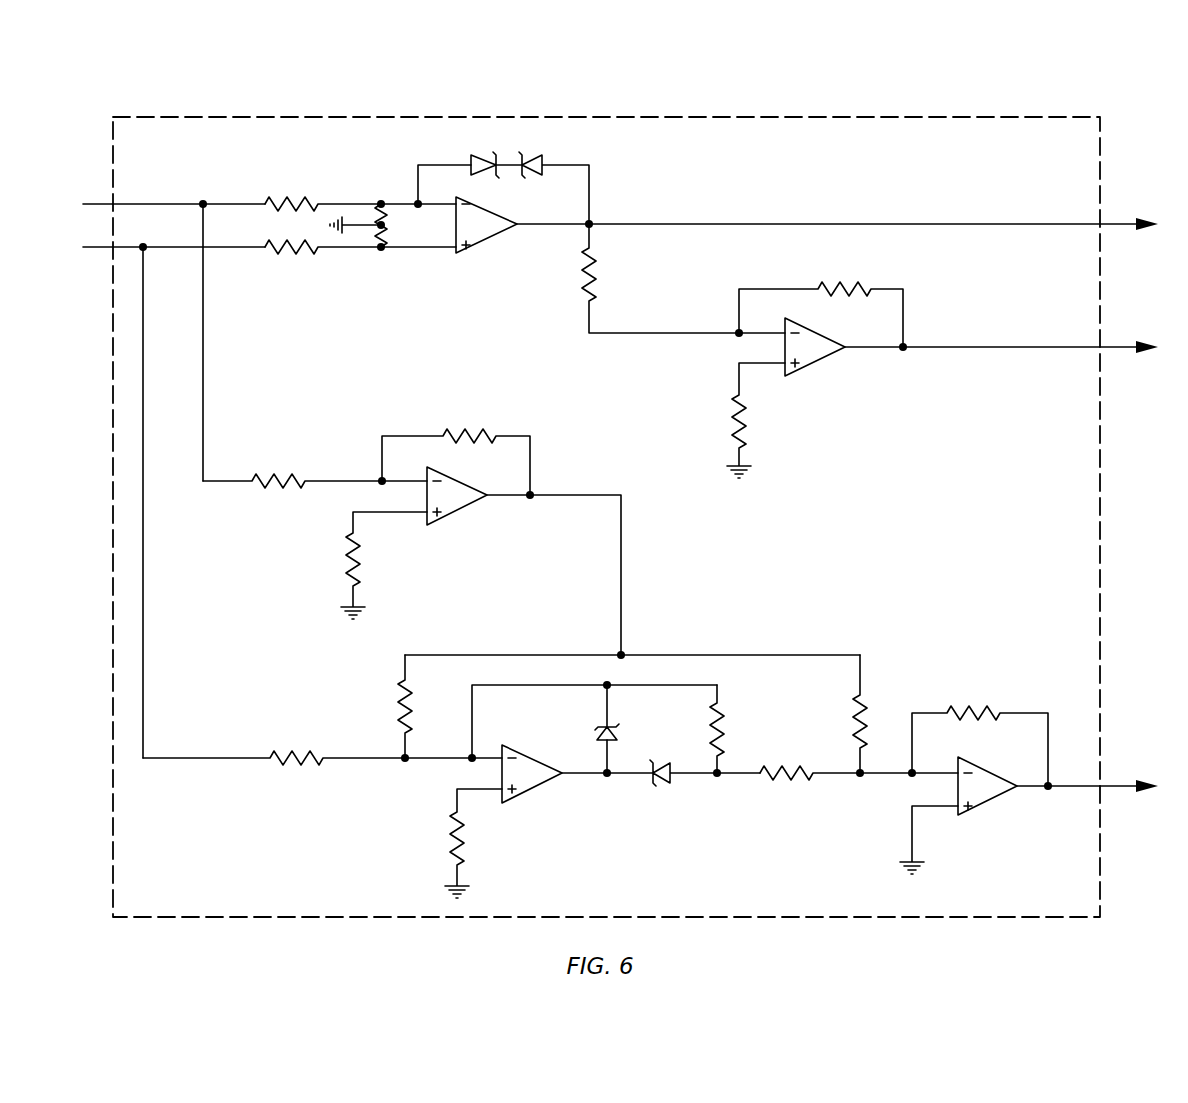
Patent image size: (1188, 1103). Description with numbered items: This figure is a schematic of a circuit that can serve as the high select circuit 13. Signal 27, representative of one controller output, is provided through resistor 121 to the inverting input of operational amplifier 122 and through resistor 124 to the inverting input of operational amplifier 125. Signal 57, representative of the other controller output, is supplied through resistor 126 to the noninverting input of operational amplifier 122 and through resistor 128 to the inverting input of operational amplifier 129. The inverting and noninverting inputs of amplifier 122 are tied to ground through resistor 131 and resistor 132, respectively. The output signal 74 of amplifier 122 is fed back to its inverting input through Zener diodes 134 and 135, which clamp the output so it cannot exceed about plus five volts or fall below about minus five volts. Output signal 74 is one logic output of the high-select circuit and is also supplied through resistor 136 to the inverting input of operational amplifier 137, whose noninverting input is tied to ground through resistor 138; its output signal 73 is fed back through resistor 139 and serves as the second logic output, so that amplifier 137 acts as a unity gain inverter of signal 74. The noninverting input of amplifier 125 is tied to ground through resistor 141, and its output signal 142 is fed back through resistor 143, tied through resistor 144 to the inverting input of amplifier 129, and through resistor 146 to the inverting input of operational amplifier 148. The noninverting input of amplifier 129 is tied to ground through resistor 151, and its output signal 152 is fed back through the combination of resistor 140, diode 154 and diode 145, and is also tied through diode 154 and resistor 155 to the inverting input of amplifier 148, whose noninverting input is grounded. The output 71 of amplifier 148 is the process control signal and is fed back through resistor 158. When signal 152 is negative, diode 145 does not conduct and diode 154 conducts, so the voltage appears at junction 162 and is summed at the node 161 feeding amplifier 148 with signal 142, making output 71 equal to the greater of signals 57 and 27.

The high select circuit 13 is at (1101, 138).
The signal 27 is at (88, 202).
The signal 57 is at (85, 250).
The output 71 is at (1122, 782).
The output signal 73 is at (1125, 350).
The output signal 74 is at (1130, 222).
The resistor 121 is at (290, 200).
The operational amplifier 122 is at (490, 248).
The resistor 124 is at (279, 476).
The operational amplifier 125 is at (448, 526).
The resistor 126 is at (303, 252).
The resistor 128 is at (297, 762).
The operational amplifier 129 is at (522, 804).
The resistor 131 is at (386, 214).
The resistor 132 is at (386, 237).
The Zener diode 134 is at (546, 154).
The Zener diode 135 is at (480, 153).
The resistor 136 is at (597, 285).
The operational amplifier 137 is at (806, 378).
The resistor 138 is at (733, 423).
The resistor 139 is at (823, 288).
The resistor 140 is at (722, 703).
The resistor 141 is at (345, 567).
The output signal 142 is at (510, 498).
The resistor 143 is at (471, 430).
The resistor 144 is at (400, 711).
The diode 145 is at (622, 727).
The resistor 146 is at (864, 695).
The operational amplifier 148 is at (986, 816).
The resistor 151 is at (452, 842).
The output signal 152 is at (575, 776).
The diode 154 is at (668, 784).
The resistor 155 is at (786, 766).
The resistor 158 is at (969, 706).
The junction line 161 is at (858, 777).
The junction 162 is at (716, 777).